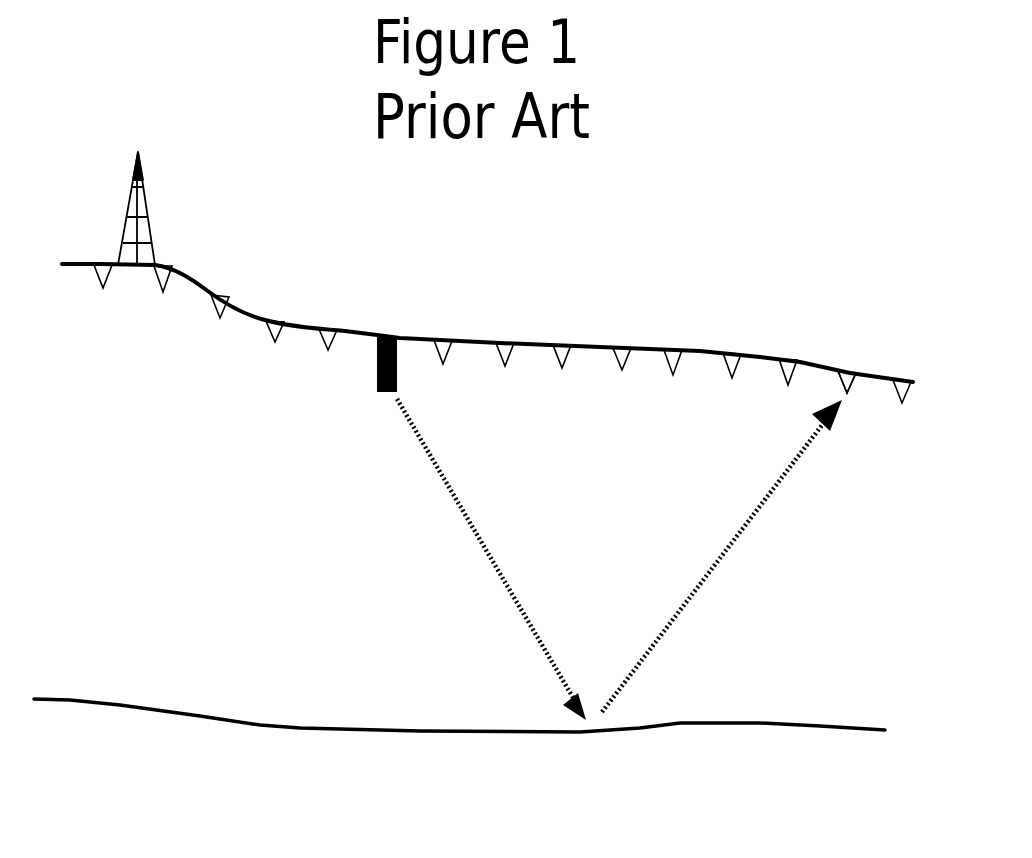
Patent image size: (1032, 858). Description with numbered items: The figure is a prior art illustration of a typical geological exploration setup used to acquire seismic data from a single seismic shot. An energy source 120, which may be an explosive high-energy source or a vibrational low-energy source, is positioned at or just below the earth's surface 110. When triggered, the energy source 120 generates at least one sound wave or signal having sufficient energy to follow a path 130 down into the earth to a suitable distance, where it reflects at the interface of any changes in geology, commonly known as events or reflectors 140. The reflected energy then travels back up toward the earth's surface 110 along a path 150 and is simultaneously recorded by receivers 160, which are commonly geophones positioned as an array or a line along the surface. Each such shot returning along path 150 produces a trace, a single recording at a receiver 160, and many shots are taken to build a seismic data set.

The earth's surface 110 is at (252, 313).
The energy source 120 is at (376, 392).
The path 130 is at (490, 556).
The reflectors 140 is at (717, 726).
The path 150 is at (717, 572).
The receivers 160 is at (848, 371).